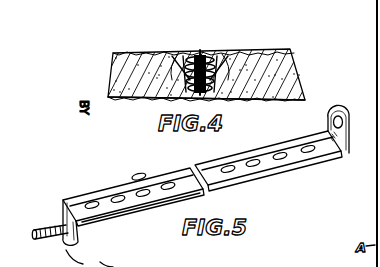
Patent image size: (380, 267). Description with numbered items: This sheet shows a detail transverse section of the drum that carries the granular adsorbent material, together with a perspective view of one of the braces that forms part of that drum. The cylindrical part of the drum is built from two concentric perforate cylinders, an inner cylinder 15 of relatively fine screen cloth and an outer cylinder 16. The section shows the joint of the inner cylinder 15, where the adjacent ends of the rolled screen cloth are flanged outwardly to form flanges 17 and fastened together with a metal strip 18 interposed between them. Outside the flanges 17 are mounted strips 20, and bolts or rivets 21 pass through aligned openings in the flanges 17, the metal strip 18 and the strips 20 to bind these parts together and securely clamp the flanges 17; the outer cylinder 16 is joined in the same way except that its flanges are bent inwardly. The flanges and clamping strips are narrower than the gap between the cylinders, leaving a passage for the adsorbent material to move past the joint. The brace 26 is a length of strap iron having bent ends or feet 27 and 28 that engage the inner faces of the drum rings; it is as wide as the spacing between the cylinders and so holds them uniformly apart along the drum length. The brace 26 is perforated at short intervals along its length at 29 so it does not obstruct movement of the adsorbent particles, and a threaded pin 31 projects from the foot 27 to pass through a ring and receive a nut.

In FIG. 4, the inner cylinder 15 is at (294, 48).
In FIG. 4, the outer cylinder 16 is at (302, 98).
In FIG. 4, the flanges 17 is at (191, 62).
In FIG. 4, the metal strip 18 is at (215, 58).
In FIG. 4, the strips 20 is at (181, 60).
In FIG. 4, the bolts or rivets 21 is at (170, 62).
In FIG. 5, the braces 26 is at (150, 198).
In FIG. 5, the feet 27 is at (97, 263).
In FIG. 5, the foot 28 is at (354, 134).
In FIG. 5, the perforations 29 is at (257, 166).
In FIG. 5, the threaded pins 31 is at (50, 222).